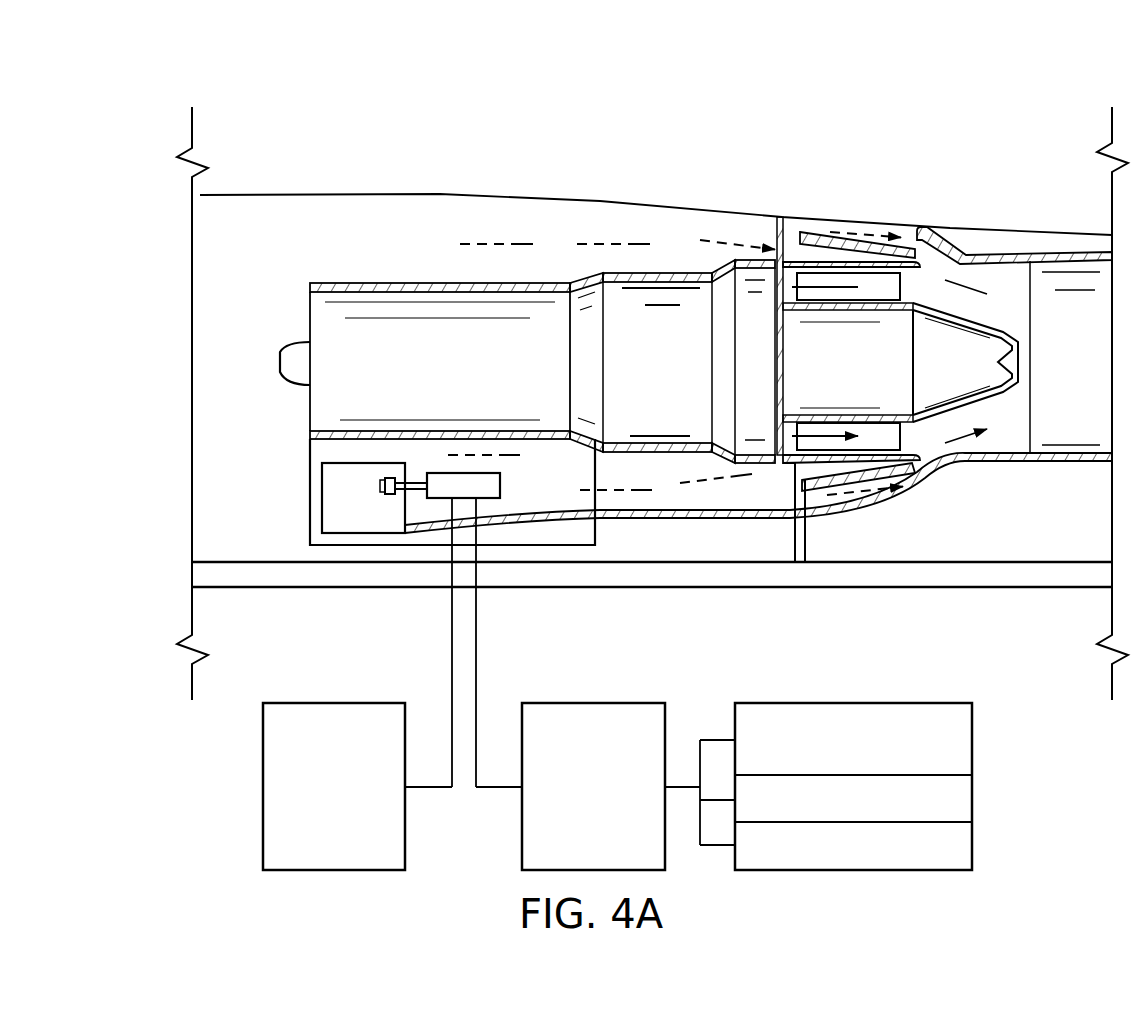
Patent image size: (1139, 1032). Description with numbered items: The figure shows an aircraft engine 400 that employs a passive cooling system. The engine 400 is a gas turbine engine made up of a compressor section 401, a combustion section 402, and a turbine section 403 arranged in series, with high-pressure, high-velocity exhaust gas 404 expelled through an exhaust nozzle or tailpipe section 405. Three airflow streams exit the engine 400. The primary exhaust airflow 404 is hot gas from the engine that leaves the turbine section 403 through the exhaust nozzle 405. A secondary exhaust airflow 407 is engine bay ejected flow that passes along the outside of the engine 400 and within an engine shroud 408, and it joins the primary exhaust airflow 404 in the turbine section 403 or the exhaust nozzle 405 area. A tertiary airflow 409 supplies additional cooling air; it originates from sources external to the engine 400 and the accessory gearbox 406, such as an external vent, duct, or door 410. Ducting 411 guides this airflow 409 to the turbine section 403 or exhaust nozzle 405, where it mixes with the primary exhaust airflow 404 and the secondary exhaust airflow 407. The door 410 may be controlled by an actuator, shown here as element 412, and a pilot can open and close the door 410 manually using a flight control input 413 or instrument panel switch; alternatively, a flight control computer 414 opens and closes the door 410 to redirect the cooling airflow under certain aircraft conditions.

The aircraft engine 400 is at (366, 76).
The compressor section 401 is at (399, 279).
The combustion section 402 is at (664, 270).
The turbine section 403 is at (914, 203).
The primary exhaust airflow 404 is at (849, 293).
The exhaust nozzle 405 is at (1012, 234).
The accessory gearbox 406 is at (318, 450).
The secondary exhaust airflow 407 is at (730, 242).
The engine shroud 408 is at (456, 206).
The tertiary airflow 409 is at (478, 455).
The door 410 is at (318, 497).
The ducting 411 is at (897, 500).
The actuator 412 is at (505, 484).
The flight control input 413 is at (312, 835).
The flight control computer 414 is at (572, 850).